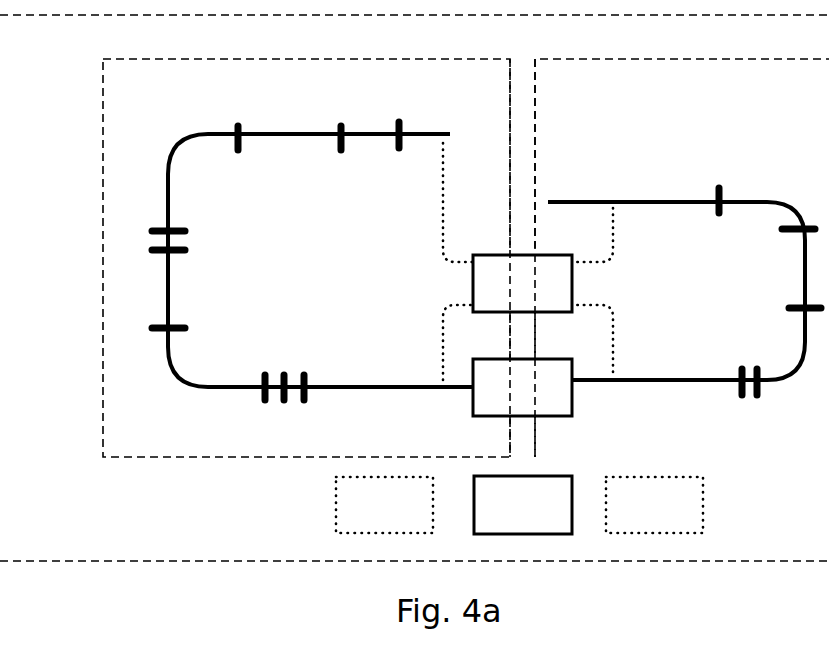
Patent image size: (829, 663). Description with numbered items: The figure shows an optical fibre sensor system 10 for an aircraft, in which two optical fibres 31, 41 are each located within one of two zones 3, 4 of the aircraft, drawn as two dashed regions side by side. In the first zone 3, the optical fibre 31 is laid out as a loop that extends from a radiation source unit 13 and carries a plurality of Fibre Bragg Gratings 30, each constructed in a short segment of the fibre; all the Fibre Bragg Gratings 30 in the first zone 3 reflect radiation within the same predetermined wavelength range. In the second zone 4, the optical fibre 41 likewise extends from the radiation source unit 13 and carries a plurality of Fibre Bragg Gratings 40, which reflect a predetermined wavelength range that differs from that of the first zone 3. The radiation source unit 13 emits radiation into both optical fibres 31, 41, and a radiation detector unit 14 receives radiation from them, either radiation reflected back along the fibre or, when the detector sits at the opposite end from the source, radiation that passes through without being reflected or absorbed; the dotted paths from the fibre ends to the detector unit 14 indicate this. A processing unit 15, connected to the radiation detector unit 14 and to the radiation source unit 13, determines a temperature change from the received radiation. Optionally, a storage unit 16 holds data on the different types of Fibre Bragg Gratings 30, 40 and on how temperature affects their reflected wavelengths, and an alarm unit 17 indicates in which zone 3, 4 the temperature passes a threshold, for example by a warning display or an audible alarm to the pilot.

The optical fibre sensor system 10 is at (53, 93).
The first zone 3 is at (151, 108).
The second zone 4 is at (595, 111).
The Fibre Bragg Gratings 30 is at (285, 369).
The optical fibre 31 is at (388, 386).
The Fibre Bragg Gratings 40 is at (712, 230).
The optical fibre 41 is at (708, 379).
The radiation source unit 13 is at (534, 399).
The radiation detector unit 14 is at (534, 296).
The processing unit 15 is at (535, 516).
The storage unit 16 is at (397, 516).
The alarm unit 17 is at (667, 516).